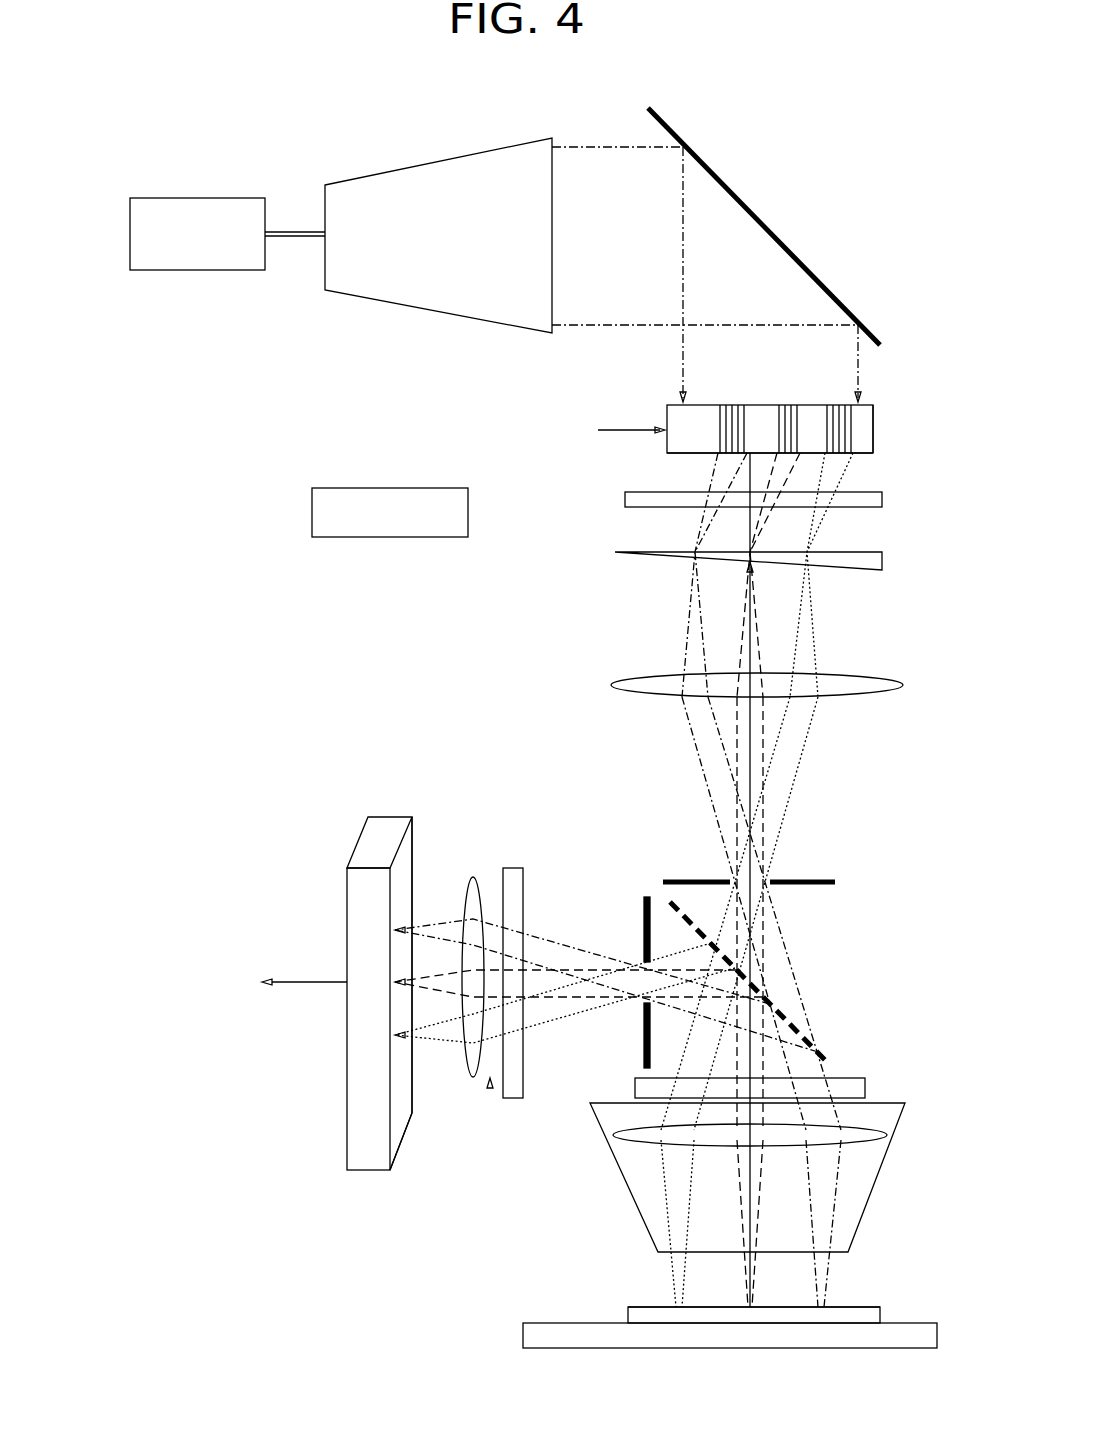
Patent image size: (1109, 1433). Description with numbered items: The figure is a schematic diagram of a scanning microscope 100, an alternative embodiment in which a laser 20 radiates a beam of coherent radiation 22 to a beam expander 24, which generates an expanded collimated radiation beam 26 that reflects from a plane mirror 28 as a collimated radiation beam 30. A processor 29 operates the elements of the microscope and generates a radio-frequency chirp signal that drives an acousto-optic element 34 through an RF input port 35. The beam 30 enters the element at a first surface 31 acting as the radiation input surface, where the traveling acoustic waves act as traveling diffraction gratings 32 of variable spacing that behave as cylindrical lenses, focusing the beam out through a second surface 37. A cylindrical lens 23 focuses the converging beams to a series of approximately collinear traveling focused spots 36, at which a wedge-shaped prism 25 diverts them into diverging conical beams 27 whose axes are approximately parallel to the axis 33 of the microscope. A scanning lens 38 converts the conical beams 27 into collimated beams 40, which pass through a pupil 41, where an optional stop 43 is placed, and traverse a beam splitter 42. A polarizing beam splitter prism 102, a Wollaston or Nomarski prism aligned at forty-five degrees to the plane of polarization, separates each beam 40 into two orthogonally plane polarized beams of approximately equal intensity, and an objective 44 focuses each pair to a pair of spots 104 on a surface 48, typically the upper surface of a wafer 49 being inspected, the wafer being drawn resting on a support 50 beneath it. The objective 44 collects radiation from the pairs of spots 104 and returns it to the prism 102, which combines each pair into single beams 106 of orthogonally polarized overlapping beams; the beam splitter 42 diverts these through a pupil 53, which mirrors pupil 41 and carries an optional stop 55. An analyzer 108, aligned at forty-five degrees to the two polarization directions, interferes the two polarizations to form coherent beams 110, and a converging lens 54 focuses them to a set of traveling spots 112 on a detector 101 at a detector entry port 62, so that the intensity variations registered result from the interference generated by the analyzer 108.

The laser 20 is at (197, 198).
The beam of coherent radiation 22 is at (299, 232).
The beam expander 24 is at (412, 167).
The expanded collimated radiation beam 26 is at (600, 147).
The plane mirror 28 is at (790, 247).
The collimated radiation beam 30 is at (683, 345).
The first surface 31 is at (695, 405).
The traveling diffraction gratings 32 is at (832, 405).
The acousto-optic element 34 is at (875, 418).
The RF input port 35 is at (666, 422).
The second surface 37 is at (680, 453).
The cylindrical lens 23 is at (625, 498).
The traveling focused spots 36 is at (825, 540).
The wedge-shaped prism 25 is at (882, 560).
The axis 33 is at (749, 606).
The diverging conical beams 27 is at (838, 628).
The scanning lens 38 is at (636, 675).
The collimated beams 40 is at (836, 757).
The pupil 41 is at (790, 853).
The stop 43 is at (822, 880).
The stop 55 is at (647, 897).
The beam splitter 42 is at (818, 1054).
The single beams 106 is at (555, 912).
The pupil 53 is at (604, 1015).
The polarizing beam splitter prism 102 is at (868, 1088).
The objective 44 is at (612, 1160).
The pairs of spots 104 is at (888, 1234).
The surface 48 is at (628, 1307).
The wafer 49 is at (868, 1307).
The stage 50 is at (558, 1323).
The detector 101 is at (398, 817).
The detector entry port 62 is at (400, 890).
The traveling spots 112 is at (431, 1085).
The converging lens 54 is at (473, 877).
The coherent beams 110 is at (490, 1090).
The analyzer 108 is at (511, 1100).
The scanning microscope 100 is at (242, 818).
The processor 29 is at (400, 488).